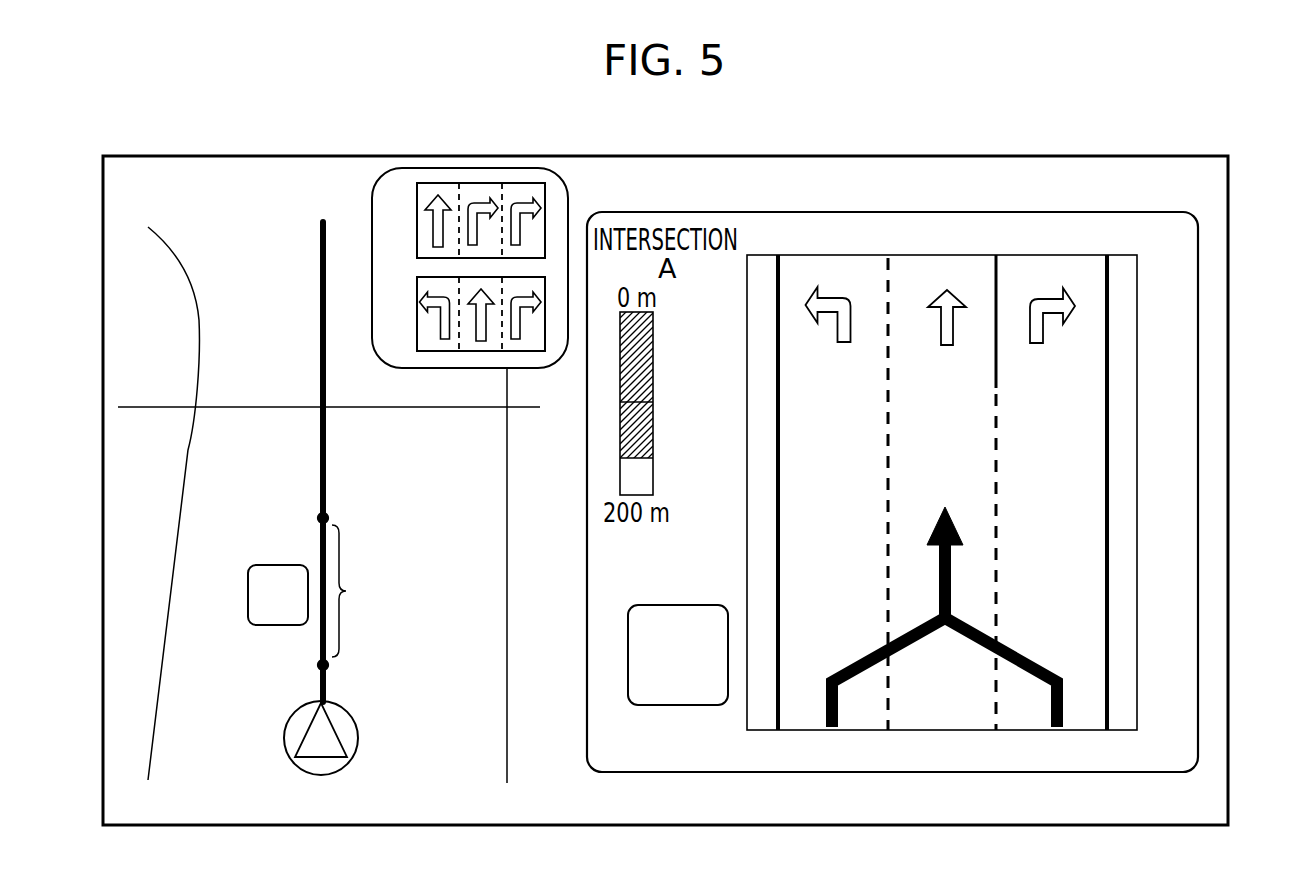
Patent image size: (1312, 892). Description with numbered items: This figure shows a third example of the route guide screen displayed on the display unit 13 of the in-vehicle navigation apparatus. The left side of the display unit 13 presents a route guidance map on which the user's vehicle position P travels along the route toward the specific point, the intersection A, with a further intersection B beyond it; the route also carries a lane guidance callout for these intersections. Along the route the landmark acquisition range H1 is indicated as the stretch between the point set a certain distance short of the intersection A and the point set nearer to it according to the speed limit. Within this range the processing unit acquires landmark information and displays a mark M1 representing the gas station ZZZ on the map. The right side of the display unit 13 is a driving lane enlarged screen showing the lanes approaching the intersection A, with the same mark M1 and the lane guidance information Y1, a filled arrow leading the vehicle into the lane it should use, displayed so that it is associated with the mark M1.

The display unit 13 is at (1228, 341).
The intersection A is at (323, 408).
The intersection B is at (372, 254).
The landmark acquisition range H1 is at (355, 591).
The mark M1 is at (282, 626).
The vehicle position mark P is at (323, 700).
The lane guidance information Y1 is at (1062, 718).